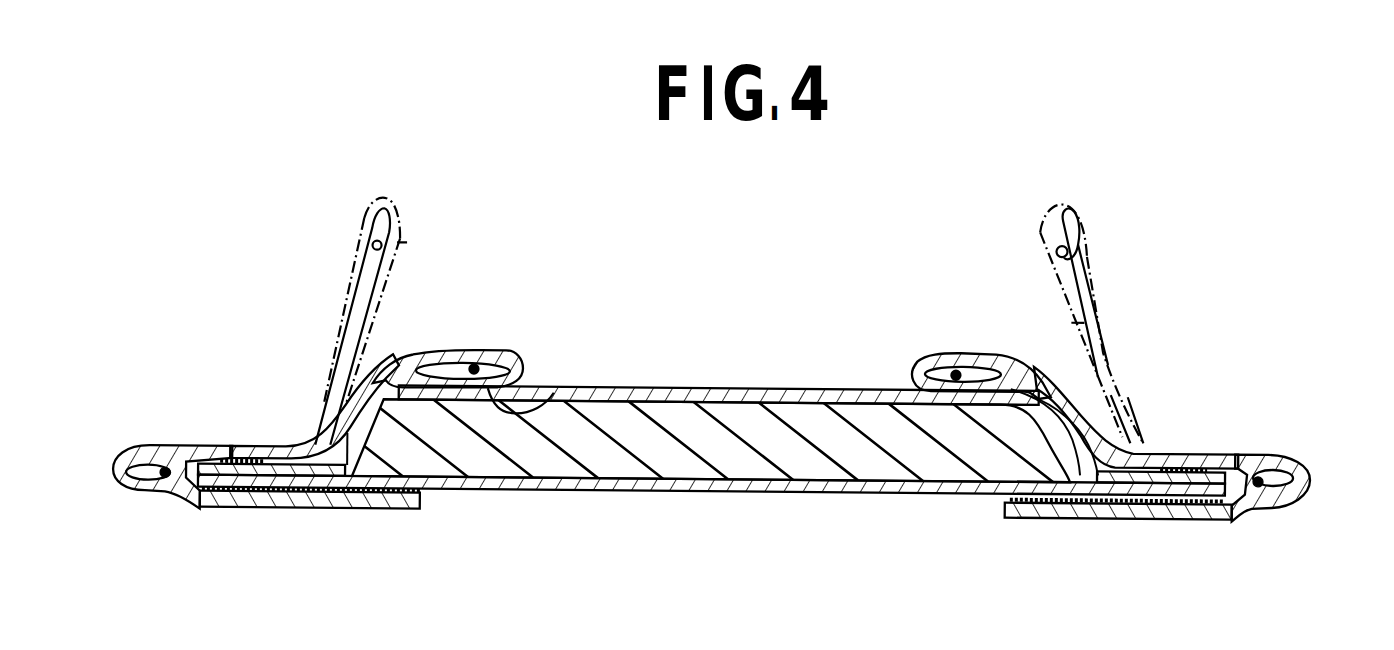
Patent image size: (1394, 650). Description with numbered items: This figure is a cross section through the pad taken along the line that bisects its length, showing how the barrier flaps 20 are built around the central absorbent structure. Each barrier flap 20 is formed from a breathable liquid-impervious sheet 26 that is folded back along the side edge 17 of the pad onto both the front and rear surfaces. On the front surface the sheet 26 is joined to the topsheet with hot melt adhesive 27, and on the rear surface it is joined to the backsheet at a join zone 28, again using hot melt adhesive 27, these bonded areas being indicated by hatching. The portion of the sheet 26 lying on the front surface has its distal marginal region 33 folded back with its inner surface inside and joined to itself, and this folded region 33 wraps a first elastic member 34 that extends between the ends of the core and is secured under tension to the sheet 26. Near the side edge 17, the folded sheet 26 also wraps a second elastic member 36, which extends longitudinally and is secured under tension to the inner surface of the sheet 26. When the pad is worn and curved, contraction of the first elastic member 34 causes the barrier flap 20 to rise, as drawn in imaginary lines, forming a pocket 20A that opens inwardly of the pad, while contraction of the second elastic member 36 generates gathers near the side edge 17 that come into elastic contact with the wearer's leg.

The side edge 17 is at (115, 468).
The barrier flap 20 is at (327, 323).
The pocket 20A is at (390, 330).
The breathable liquid-impervious sheet 26 is at (217, 445).
The hot melt adhesive 27 is at (1183, 463).
The join zone 28 is at (247, 497).
The distal marginal region 33 is at (400, 244).
The first elastic member 34 is at (473, 368).
The second elastic member 36 is at (164, 480).